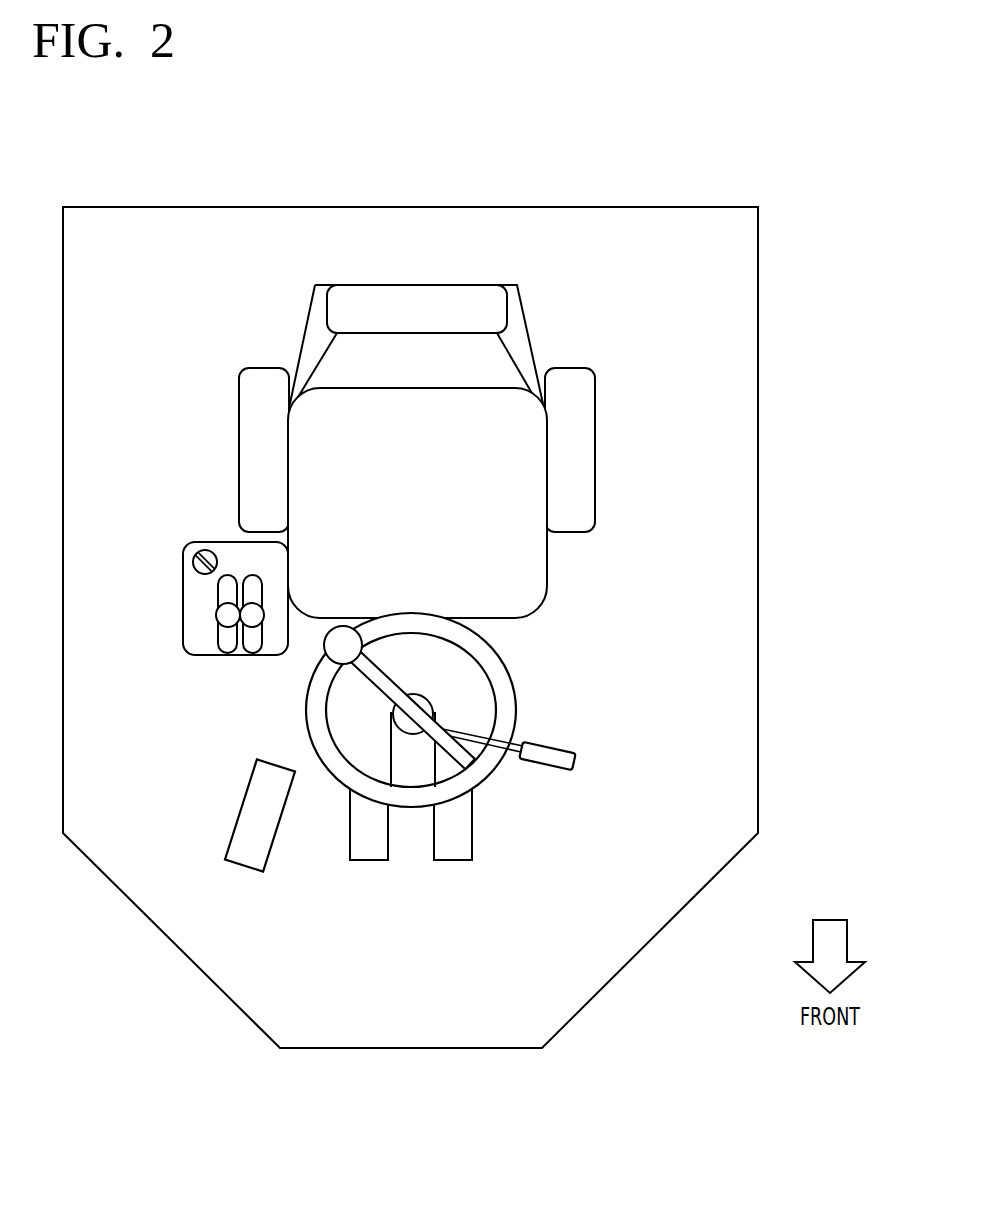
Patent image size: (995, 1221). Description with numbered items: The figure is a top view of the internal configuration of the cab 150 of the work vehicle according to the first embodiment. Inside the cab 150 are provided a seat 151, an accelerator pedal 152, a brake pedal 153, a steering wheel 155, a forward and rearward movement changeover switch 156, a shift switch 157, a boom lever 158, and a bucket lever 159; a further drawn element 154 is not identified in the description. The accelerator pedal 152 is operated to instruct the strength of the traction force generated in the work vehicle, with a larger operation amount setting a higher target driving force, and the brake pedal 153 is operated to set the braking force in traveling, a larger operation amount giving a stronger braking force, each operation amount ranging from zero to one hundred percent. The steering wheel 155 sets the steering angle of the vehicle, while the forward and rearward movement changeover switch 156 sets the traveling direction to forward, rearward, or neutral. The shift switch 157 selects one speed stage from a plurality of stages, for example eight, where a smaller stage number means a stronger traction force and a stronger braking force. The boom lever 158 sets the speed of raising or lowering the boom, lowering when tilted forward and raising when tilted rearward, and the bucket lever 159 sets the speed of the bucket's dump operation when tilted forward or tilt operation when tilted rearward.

The cab 150 is at (582, 152).
The seat 151 is at (433, 284).
The accelerator pedal 152 is at (240, 804).
The brake pedal 153 is at (370, 862).
The accelerator pedal 154 is at (455, 862).
The steering wheel 155 is at (483, 724).
The forward and rearward movement changeover switch 156 is at (577, 762).
The shift switch 157 is at (193, 565).
The boom lever 158 is at (216, 615).
The bucket lever 159 is at (250, 633).